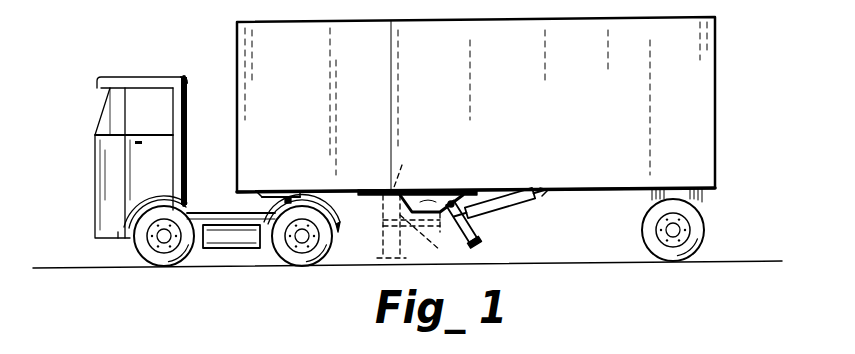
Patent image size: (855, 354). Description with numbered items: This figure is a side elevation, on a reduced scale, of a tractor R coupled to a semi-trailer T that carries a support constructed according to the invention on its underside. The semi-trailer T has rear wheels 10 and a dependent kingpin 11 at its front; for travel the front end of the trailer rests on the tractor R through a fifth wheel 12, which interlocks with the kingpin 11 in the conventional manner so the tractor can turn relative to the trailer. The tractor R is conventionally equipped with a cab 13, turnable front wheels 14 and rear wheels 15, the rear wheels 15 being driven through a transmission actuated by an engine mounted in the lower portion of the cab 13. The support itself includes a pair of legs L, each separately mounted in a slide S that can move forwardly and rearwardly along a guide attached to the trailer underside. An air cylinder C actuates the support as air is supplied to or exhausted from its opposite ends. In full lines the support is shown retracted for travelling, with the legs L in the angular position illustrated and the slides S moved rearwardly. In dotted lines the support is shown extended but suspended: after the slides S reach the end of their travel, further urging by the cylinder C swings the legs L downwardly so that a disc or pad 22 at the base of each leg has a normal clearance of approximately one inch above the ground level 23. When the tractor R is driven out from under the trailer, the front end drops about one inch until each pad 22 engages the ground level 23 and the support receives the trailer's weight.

The tractor R is at (88, 162).
The semi-trailer T is at (719, 160).
The slide S is at (437, 190).
The leg L is at (450, 231).
The air cylinder C is at (511, 208).
The rear wheels 10 is at (706, 233).
The kingpin 11 is at (288, 192).
The fifth wheel 12 is at (320, 200).
The cab 13 is at (187, 140).
The front wheels 14 is at (143, 258).
The rear wheels 15 is at (317, 258).
The disc or pad 22 is at (471, 233).
The ground level 23 is at (576, 263).